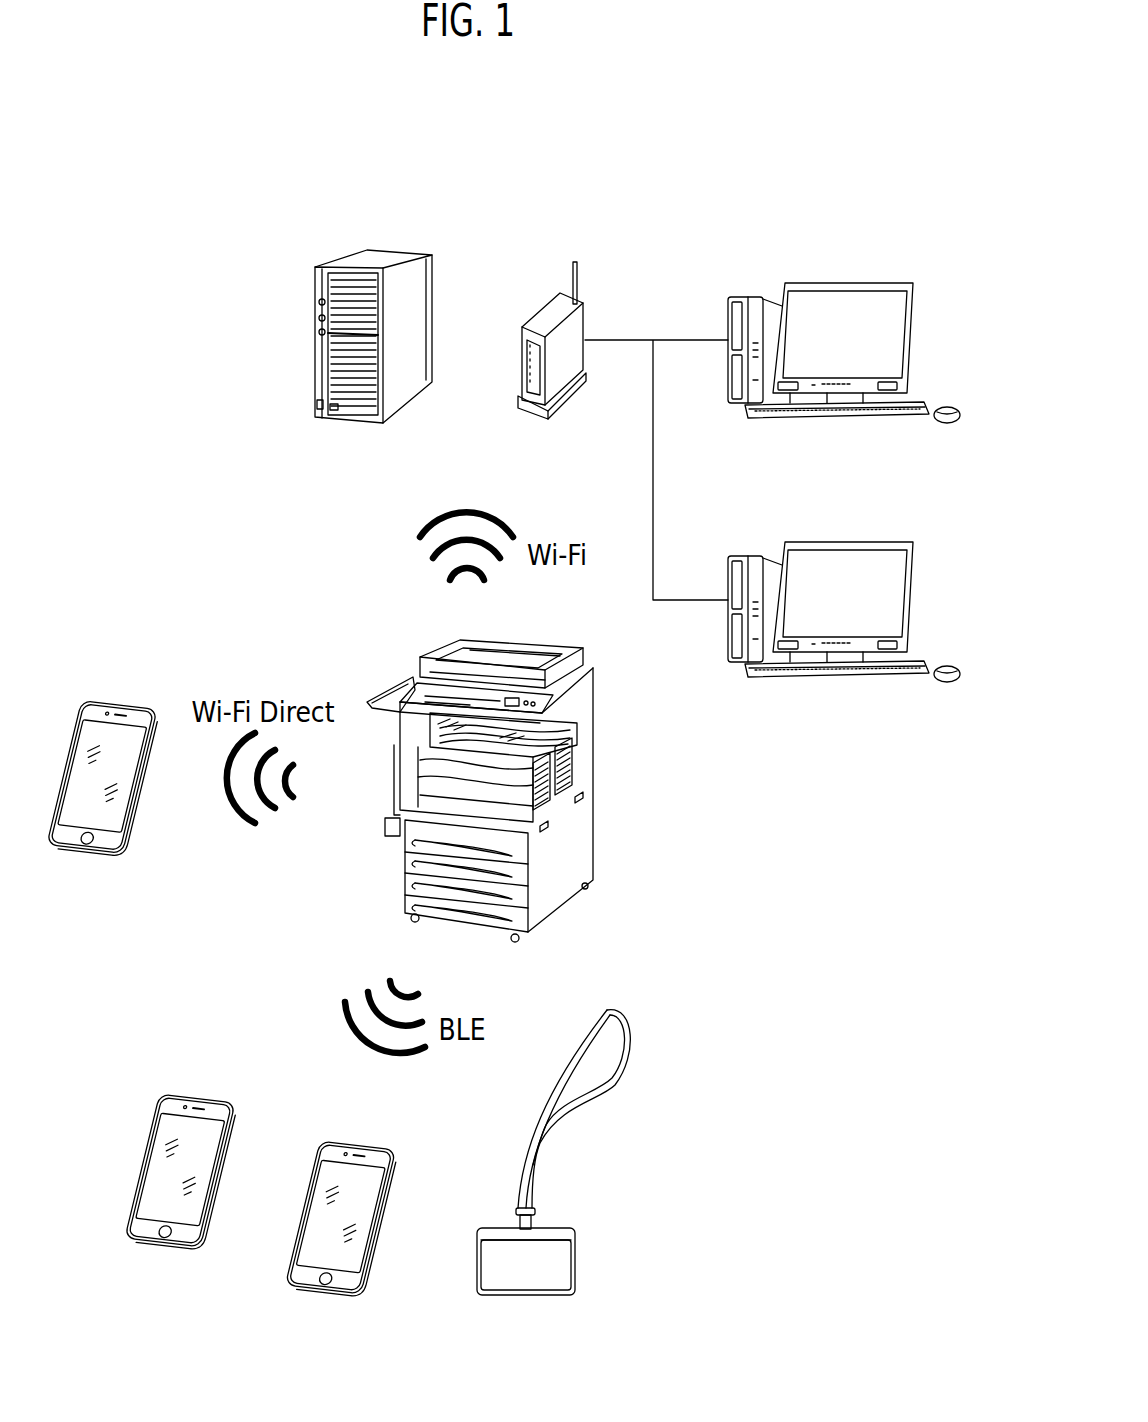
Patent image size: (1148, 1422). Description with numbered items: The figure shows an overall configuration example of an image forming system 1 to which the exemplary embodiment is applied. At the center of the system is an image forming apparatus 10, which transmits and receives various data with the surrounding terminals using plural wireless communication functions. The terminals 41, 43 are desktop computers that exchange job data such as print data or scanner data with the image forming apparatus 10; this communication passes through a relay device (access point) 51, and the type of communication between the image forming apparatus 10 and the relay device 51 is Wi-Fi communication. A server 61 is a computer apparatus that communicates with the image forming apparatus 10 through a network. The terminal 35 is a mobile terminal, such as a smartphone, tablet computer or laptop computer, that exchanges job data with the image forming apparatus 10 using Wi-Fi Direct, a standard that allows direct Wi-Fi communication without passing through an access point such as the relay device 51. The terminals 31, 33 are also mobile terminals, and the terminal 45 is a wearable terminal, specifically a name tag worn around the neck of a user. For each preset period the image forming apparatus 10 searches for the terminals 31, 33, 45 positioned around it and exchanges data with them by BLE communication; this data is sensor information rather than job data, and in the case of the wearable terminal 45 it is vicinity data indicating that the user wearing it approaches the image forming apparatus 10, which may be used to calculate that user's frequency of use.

The image forming system 1 is at (155, 168).
The image forming apparatus 10 is at (594, 778).
The terminal 31 is at (313, 1291).
The terminal 33 is at (152, 1246).
The terminal 35 is at (103, 698).
The terminal 41 is at (838, 282).
The terminal 43 is at (836, 540).
The terminal 45 is at (517, 1296).
The relay device (access point) 51 is at (537, 310).
The server 61 is at (313, 278).